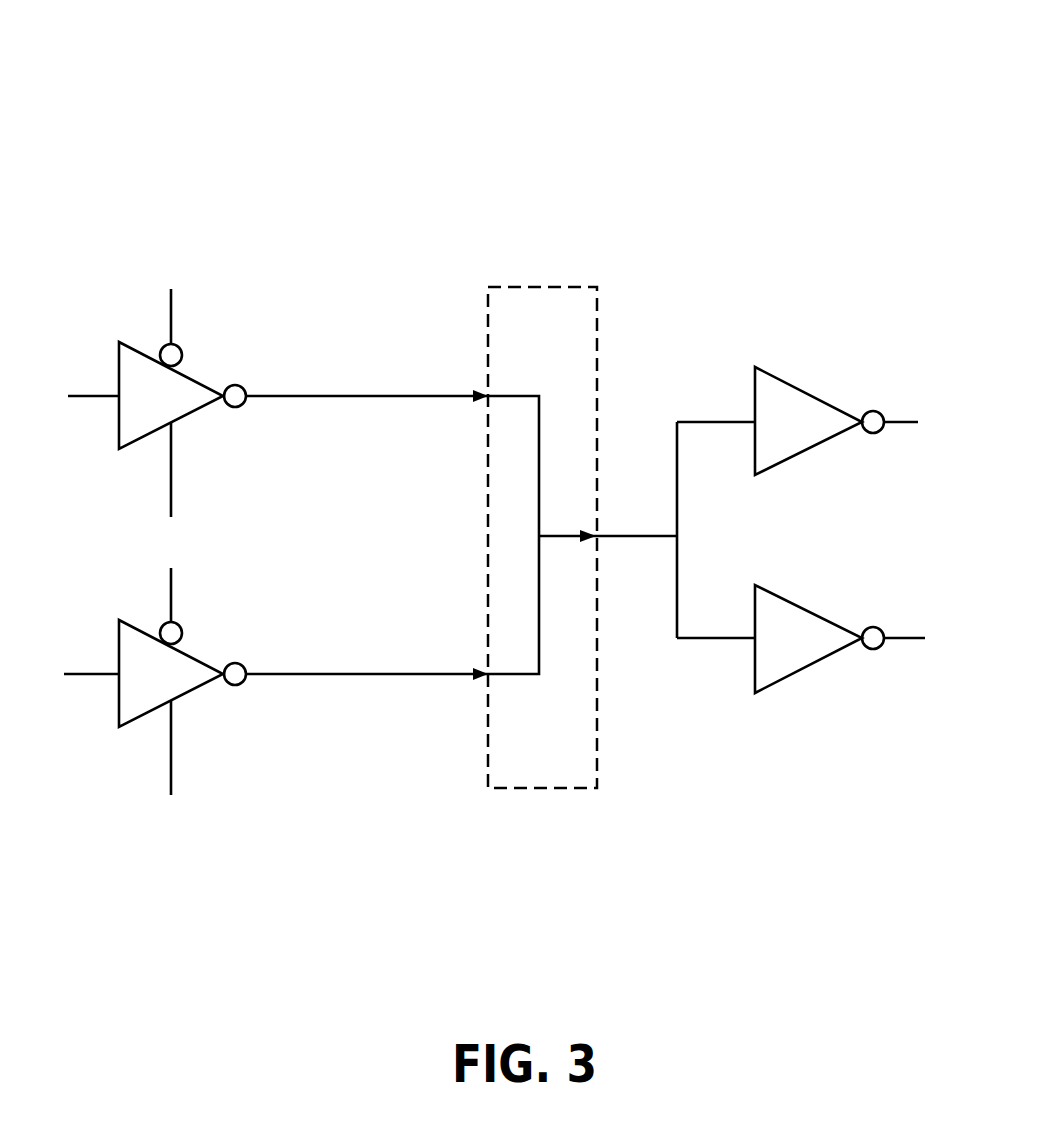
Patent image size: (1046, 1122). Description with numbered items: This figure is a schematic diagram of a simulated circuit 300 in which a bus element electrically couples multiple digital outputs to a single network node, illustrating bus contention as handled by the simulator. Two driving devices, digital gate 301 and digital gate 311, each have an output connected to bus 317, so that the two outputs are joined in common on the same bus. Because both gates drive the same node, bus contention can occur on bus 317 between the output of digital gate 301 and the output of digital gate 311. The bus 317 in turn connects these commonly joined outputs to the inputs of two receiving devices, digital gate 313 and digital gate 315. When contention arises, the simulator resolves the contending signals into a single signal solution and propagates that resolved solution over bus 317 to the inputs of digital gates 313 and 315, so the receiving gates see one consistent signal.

The bus-based signal distribution circuit 300 is at (372, 155).
The digital gate 301 is at (193, 378).
The digital gate 311 is at (193, 656).
The digital gate 313 is at (830, 404).
The digital gate 315 is at (830, 622).
The bus 317 is at (597, 327).